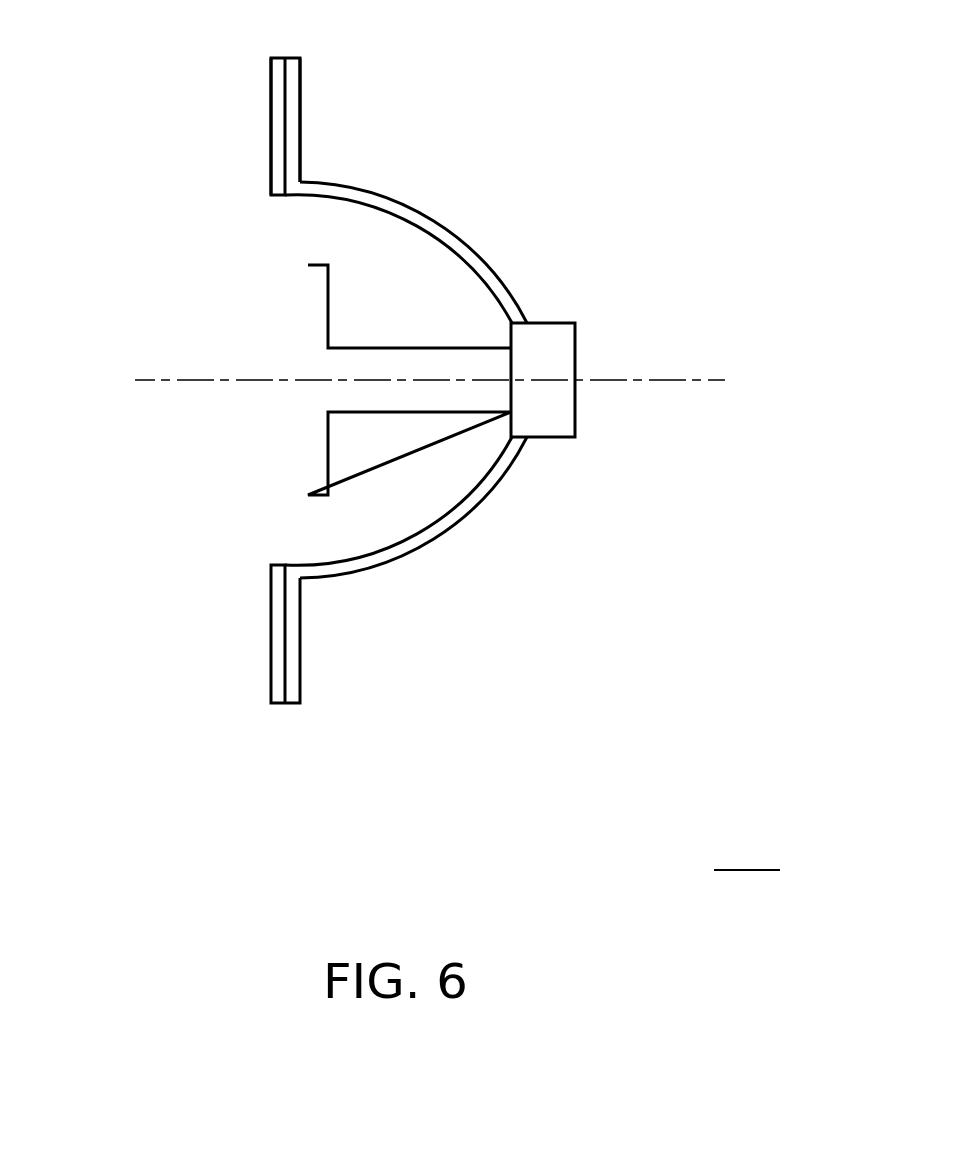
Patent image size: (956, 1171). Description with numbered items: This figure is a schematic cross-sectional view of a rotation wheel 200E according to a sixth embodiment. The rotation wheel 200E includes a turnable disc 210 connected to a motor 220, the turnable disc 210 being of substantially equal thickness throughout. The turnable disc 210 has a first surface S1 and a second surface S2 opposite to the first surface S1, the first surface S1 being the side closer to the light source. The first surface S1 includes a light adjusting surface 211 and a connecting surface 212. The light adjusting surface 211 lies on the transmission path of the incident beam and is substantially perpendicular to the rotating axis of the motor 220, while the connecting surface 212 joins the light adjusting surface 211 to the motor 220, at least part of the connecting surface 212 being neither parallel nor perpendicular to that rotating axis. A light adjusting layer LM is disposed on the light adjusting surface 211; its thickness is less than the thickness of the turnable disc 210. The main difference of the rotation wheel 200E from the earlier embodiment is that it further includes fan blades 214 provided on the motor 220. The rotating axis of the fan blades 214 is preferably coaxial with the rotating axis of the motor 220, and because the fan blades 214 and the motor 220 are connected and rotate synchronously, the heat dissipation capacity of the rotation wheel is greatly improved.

The turnable disc 210 is at (436, 379).
The light adjusting surface 211 is at (306, 101).
The connecting surface 212 is at (430, 232).
The fan blades 214 is at (320, 458).
The motor 220 is at (558, 352).
The first surface S1 is at (284, 83).
The second surface S2 is at (301, 83).
The light adjusting layer LM is at (278, 673).
The rotation wheel 200E is at (747, 853).